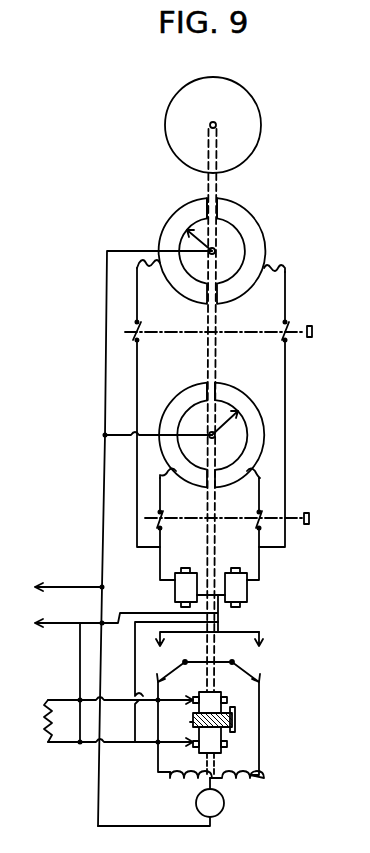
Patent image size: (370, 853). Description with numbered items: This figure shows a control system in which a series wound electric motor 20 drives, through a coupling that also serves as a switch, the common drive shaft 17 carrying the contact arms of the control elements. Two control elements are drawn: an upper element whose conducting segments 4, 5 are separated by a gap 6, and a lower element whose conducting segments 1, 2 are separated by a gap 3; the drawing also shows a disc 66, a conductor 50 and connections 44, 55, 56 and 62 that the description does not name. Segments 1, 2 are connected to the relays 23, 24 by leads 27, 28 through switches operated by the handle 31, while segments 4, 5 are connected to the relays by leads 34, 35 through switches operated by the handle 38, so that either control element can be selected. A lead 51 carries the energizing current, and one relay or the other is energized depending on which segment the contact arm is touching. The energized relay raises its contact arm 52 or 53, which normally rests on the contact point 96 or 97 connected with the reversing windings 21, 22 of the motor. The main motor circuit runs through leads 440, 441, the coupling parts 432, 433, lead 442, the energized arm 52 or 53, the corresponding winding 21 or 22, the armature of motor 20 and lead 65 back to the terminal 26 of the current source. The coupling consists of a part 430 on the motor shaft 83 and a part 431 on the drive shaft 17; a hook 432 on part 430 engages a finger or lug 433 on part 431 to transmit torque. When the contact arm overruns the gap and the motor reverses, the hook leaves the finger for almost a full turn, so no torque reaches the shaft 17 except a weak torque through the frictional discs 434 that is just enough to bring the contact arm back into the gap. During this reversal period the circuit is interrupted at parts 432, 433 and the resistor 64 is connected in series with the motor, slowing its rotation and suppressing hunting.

The wheel 66 is at (263, 96).
The shaft 17 is at (214, 562).
The conducting segment 4 is at (175, 213).
The conducting segment 5 is at (250, 213).
The gap 6 is at (216, 207).
The lead 34 is at (137, 379).
The lead 35 is at (287, 374).
The handle 38 is at (313, 330).
The lead 51 is at (105, 372).
The conducting segment 1 is at (170, 404).
The conducting segment 2 is at (249, 397).
The gap 3 is at (215, 382).
The conductor 50 is at (123, 437).
The lead 27 is at (161, 561).
The lead 28 is at (260, 563).
The handle 31 is at (311, 519).
The relay 23 is at (174, 593).
The relay 24 is at (248, 598).
The conductor 44 is at (50, 585).
The terminal 26 is at (58, 627).
The lead 440 is at (80, 666).
The lead 442 is at (135, 641).
The contact 55 is at (164, 642).
The contact 56 is at (263, 644).
The contact bar 62 is at (212, 662).
The contact arm 52 is at (173, 665).
The contact arm 53 is at (263, 673).
The contact point 96 is at (158, 712).
The contact point 97 is at (261, 716).
The resistor 64 is at (44, 712).
The lead 441 is at (131, 744).
The coupling part 431 is at (228, 700).
The hook 432 is at (237, 720).
The finger 433 is at (236, 710).
The coupling part 430 is at (228, 745).
The frictional discs 434 is at (193, 723).
The reversing winding 21 is at (176, 782).
The reversing winding 22 is at (250, 782).
The motor shaft 83 is at (216, 771).
The electric motor 20 is at (225, 806).
The lead 65 is at (128, 827).